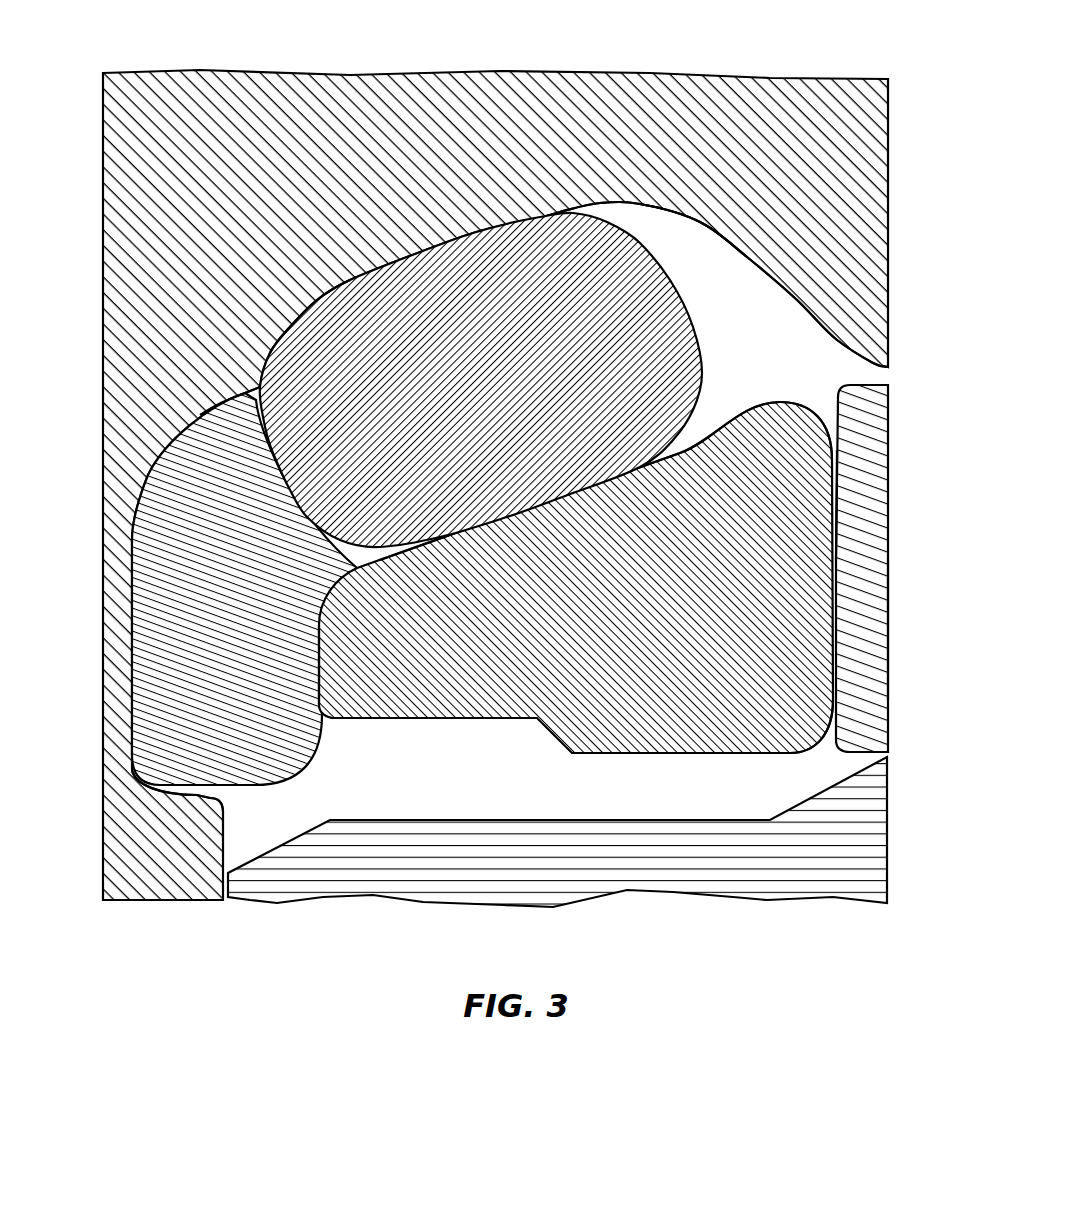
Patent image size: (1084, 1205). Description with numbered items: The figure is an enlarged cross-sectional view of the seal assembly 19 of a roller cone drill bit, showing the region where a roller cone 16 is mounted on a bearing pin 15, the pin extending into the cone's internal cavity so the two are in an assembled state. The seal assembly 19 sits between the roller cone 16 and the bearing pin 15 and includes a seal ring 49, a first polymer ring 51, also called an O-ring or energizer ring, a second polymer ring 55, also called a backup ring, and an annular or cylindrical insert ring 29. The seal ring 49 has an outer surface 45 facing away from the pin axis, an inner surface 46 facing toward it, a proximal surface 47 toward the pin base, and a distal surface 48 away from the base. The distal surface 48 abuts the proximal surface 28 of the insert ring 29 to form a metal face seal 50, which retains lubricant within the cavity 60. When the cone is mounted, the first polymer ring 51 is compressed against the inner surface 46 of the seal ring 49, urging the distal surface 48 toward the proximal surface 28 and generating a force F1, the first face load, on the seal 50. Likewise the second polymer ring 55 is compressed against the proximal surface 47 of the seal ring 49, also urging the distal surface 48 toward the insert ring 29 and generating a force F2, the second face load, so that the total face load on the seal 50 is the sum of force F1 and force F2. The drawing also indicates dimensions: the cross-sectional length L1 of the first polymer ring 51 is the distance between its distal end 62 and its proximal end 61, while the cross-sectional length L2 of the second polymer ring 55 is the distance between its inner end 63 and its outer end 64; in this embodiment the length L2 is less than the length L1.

The bearing pin 15 is at (183, 137).
The roller cone 16 is at (860, 880).
The seal assembly 19 is at (733, 283).
The proximal surface 28 is at (880, 448).
The insert ring 29 is at (870, 643).
The outer surface 45 is at (648, 752).
The inner surface 46 is at (515, 510).
The proximal surface 47 is at (323, 655).
The distal surface 48 is at (833, 487).
The seal ring 49 is at (783, 753).
The metal face seal 50 is at (833, 562).
The first polymer ring 51 is at (423, 313).
The second polymer ring 55 is at (195, 544).
The cavity 60 is at (747, 362).
The proximal end 61 is at (272, 340).
The distal end 62 is at (683, 305).
The inner end 63 is at (248, 392).
The outer end 64 is at (205, 797).
The cross-sectional length L1 is at (680, 310).
The cross-sectional length L2 is at (243, 398).
The force F1 is at (832, 600).
The force F2 is at (832, 652).